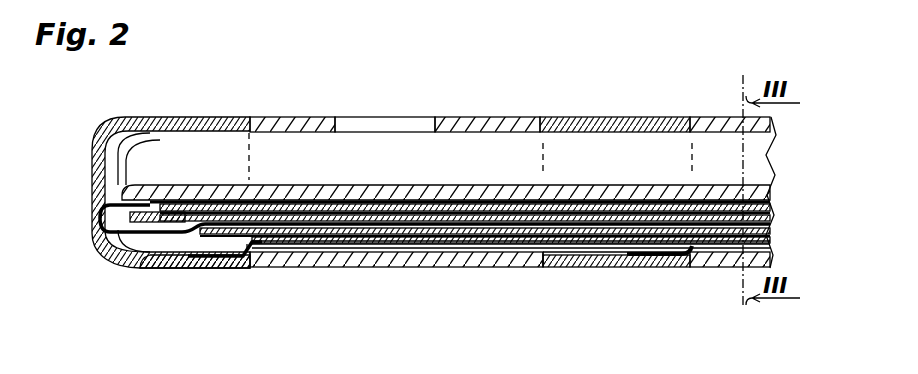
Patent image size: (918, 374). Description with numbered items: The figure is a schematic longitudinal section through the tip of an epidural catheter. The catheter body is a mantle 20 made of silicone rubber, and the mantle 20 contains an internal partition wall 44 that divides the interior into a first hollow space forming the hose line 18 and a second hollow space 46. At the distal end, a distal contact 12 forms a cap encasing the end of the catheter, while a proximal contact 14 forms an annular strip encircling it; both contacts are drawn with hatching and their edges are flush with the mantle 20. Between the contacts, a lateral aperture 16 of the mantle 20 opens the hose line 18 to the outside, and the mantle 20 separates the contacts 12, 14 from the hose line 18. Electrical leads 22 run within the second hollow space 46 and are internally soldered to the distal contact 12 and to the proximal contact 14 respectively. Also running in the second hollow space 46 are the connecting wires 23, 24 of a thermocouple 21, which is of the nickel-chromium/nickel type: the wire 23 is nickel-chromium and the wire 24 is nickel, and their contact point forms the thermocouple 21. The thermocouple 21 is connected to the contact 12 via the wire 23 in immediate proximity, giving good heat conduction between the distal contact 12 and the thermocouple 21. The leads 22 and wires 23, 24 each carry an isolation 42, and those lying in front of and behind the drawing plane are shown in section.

The distal contact 12 is at (178, 268).
The proximal contact 14 is at (592, 264).
The lateral aperture 16 is at (436, 126).
The hose line 18 is at (490, 169).
The mantle 20 is at (492, 126).
The thermocouple 21 is at (132, 190).
The electrical leads 22 is at (407, 247).
The connecting wire 23 is at (132, 268).
The connecting wire 24 is at (172, 194).
The isolation 42 is at (485, 243).
The internal partition wall 44 is at (258, 192).
The second hollow space 46 is at (235, 252).